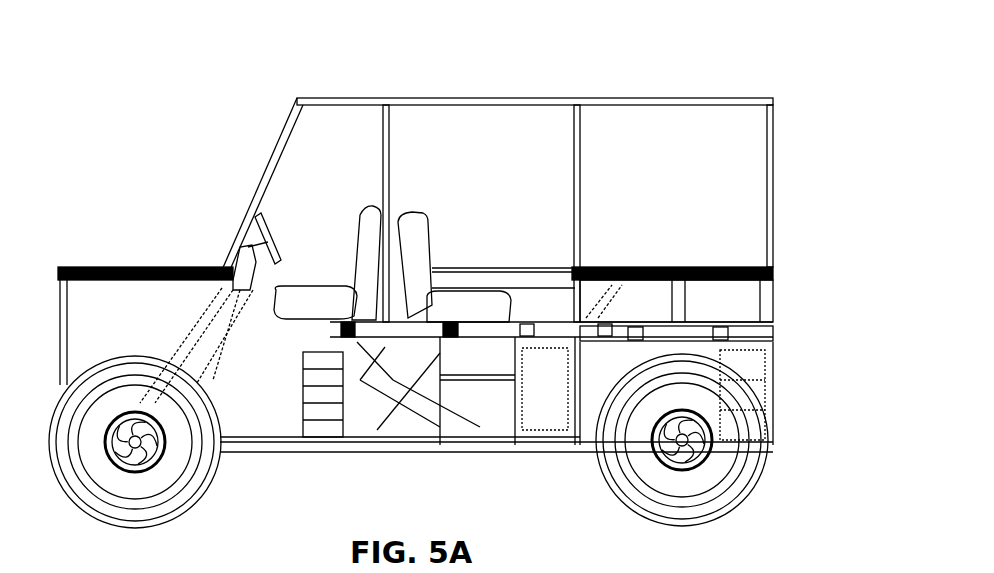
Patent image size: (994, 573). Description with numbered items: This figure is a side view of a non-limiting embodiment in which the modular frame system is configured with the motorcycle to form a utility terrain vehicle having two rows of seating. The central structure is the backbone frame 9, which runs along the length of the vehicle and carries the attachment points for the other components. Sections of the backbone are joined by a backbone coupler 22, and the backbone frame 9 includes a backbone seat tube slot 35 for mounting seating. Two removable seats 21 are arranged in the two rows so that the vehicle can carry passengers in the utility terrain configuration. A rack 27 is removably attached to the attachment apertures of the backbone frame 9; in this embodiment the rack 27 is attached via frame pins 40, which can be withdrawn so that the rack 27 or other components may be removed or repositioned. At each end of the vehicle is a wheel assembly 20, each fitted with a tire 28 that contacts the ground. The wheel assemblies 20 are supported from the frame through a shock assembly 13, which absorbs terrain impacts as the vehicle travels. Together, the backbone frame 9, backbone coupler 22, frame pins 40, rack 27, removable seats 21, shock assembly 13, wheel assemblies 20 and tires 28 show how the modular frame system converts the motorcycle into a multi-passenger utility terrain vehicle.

The backbone frame 9 is at (550, 270).
The removable seat 21 is at (345, 215).
The frame pin 40 is at (500, 330).
The backbone coupler 22 is at (610, 322).
The rack 27 is at (775, 271).
The backbone seat tube slot 35 is at (773, 333).
The shock assembly 13 is at (684, 402).
The wheel assembly 20 is at (716, 437).
The tire 28 is at (757, 476).